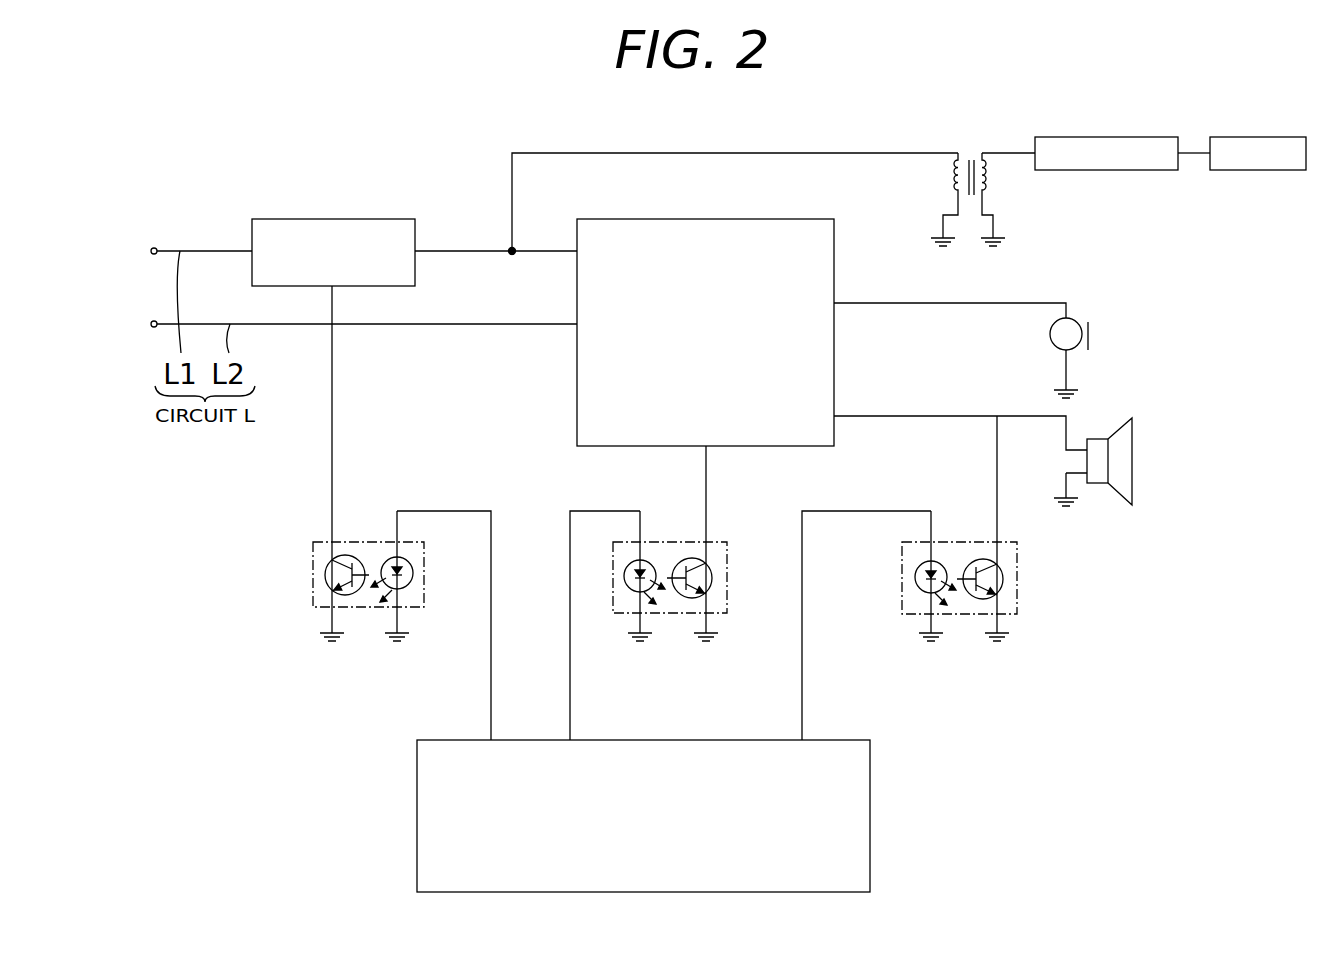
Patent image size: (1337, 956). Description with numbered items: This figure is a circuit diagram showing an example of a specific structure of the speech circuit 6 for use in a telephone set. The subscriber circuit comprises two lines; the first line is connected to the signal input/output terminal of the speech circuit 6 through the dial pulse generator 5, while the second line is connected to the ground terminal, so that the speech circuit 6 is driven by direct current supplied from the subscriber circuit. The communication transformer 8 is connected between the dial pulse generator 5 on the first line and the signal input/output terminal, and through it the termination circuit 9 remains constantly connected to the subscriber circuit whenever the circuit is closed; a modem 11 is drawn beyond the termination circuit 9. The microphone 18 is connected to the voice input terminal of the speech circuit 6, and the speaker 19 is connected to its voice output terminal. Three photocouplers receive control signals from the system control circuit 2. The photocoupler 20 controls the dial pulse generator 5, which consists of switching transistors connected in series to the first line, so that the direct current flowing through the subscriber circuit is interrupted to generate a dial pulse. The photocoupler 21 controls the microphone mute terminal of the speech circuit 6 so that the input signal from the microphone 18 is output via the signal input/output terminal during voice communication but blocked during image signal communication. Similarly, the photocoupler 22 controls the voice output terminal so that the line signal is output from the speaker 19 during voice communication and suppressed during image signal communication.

The system control circuit 2 is at (858, 826).
The dial pulse generator 5 is at (367, 219).
The speech circuit 6 is at (765, 233).
The communication transformer 8 is at (985, 176).
The termination circuit 9 is at (1104, 140).
The modem 11 is at (1251, 140).
The microphone 18 is at (1108, 331).
The speaker 19 is at (1124, 463).
The photocoupler 20 is at (323, 545).
The photocoupler 21 is at (723, 553).
The photocoupler 22 is at (958, 552).